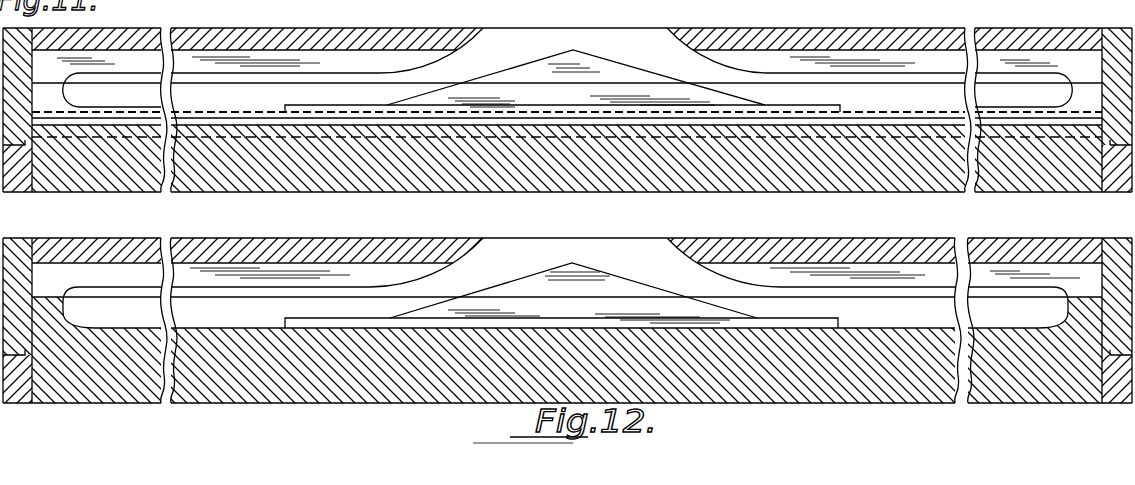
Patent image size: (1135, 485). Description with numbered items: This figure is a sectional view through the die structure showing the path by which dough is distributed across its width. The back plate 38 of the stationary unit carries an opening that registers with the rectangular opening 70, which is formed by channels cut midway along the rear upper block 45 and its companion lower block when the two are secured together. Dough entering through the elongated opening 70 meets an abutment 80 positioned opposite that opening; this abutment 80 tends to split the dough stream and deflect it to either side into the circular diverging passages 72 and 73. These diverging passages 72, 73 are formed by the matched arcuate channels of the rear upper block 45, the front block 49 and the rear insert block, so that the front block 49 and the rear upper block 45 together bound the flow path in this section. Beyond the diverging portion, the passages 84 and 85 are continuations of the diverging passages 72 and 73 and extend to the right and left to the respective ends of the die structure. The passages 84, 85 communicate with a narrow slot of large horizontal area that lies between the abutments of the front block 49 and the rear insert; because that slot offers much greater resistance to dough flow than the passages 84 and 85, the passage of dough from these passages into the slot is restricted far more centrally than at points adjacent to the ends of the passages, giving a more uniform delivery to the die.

In FIG. 11, the back plate 38 is at (1022, 32).
In FIG. 12, the back plate 38 is at (253, 248).
In FIG. 11, the rear upper block 45 is at (1047, 68).
In FIG. 12, the rear upper block 45 is at (60, 277).
In FIG. 12, the front block 49 is at (130, 393).
In FIG. 11, the rectangular opening 70 is at (462, 32).
In FIG. 12, the rectangular opening 70 is at (465, 248).
In FIG. 11, the right diverging passage 72 is at (435, 71).
In FIG. 12, the right diverging passage 72 is at (440, 275).
In FIG. 11, the left diverging passage 73 is at (707, 62).
In FIG. 12, the left diverging passage 73 is at (703, 275).
In FIG. 11, the abutment 80 is at (600, 58).
In FIG. 12, the abutment 80 is at (598, 270).
In FIG. 11, the right passage 84 is at (227, 82).
In FIG. 12, the right passage 84 is at (187, 308).
In FIG. 11, the left passage 85 is at (880, 78).
In FIG. 12, the left passage 85 is at (895, 300).